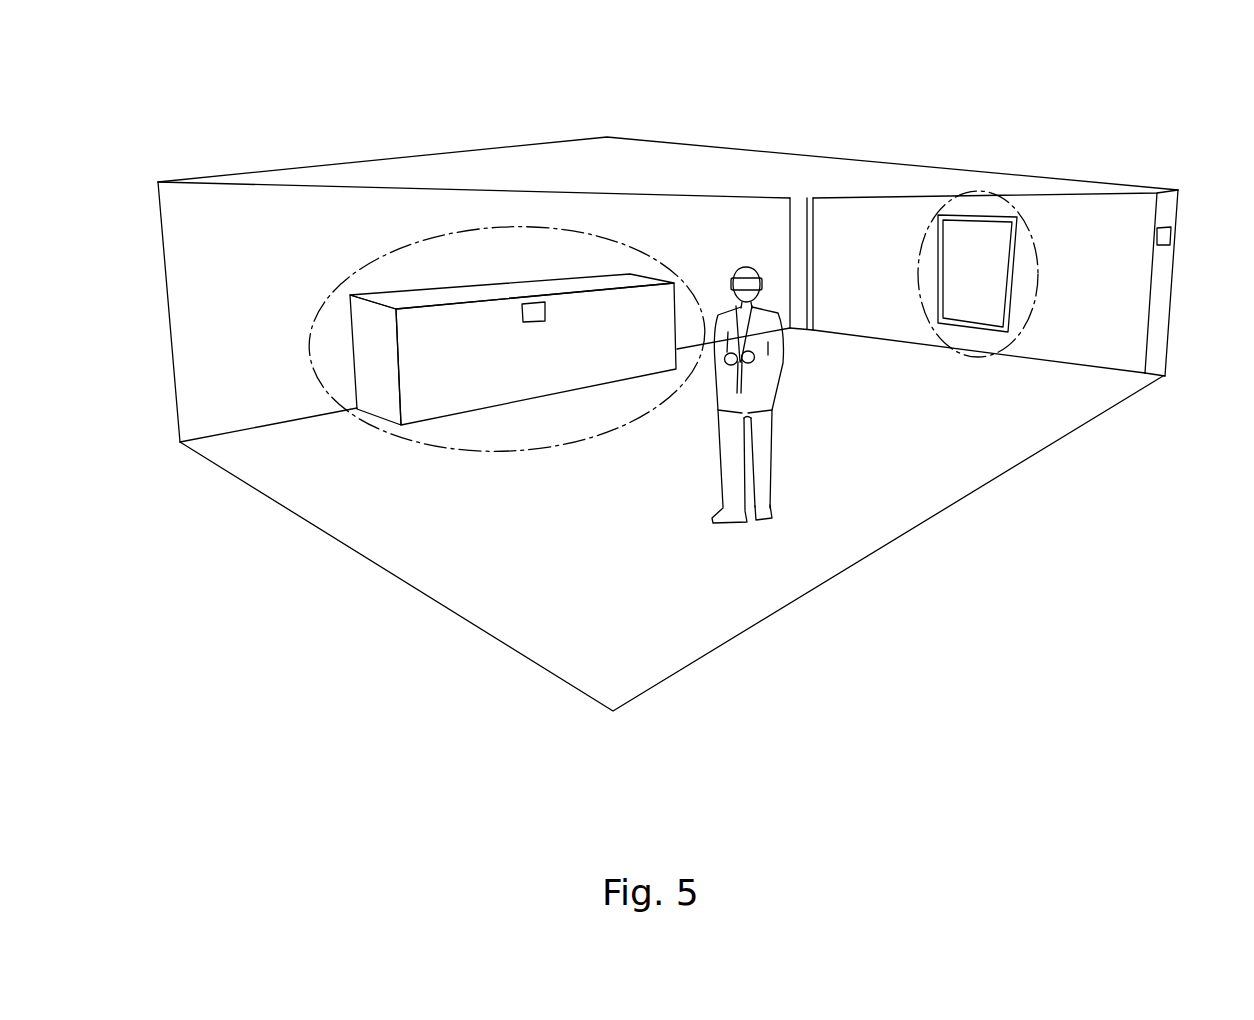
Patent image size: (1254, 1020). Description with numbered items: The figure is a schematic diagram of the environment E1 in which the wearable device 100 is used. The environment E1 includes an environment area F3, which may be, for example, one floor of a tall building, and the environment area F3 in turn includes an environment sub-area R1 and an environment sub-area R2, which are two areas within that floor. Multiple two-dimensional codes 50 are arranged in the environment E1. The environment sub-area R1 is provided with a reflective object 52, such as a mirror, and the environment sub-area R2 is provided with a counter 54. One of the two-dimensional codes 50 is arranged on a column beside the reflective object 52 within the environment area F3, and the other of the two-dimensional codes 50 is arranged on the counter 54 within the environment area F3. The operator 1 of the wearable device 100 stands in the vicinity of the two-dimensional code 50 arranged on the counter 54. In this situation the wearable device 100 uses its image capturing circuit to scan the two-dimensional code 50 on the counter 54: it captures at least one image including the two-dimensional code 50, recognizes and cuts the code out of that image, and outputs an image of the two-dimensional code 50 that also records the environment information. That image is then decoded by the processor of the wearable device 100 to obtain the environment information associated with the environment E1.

The environment E1 is at (249, 88).
The environment area F3 is at (215, 224).
The operator 1 is at (783, 347).
The wearable device 100 is at (745, 282).
The two-dimensional (2D) codes 50 is at (538, 302).
The reflective object 52 is at (938, 229).
The counter 54 is at (365, 362).
The environment sub-area R1 is at (977, 192).
The environment sub-area R2 is at (322, 313).